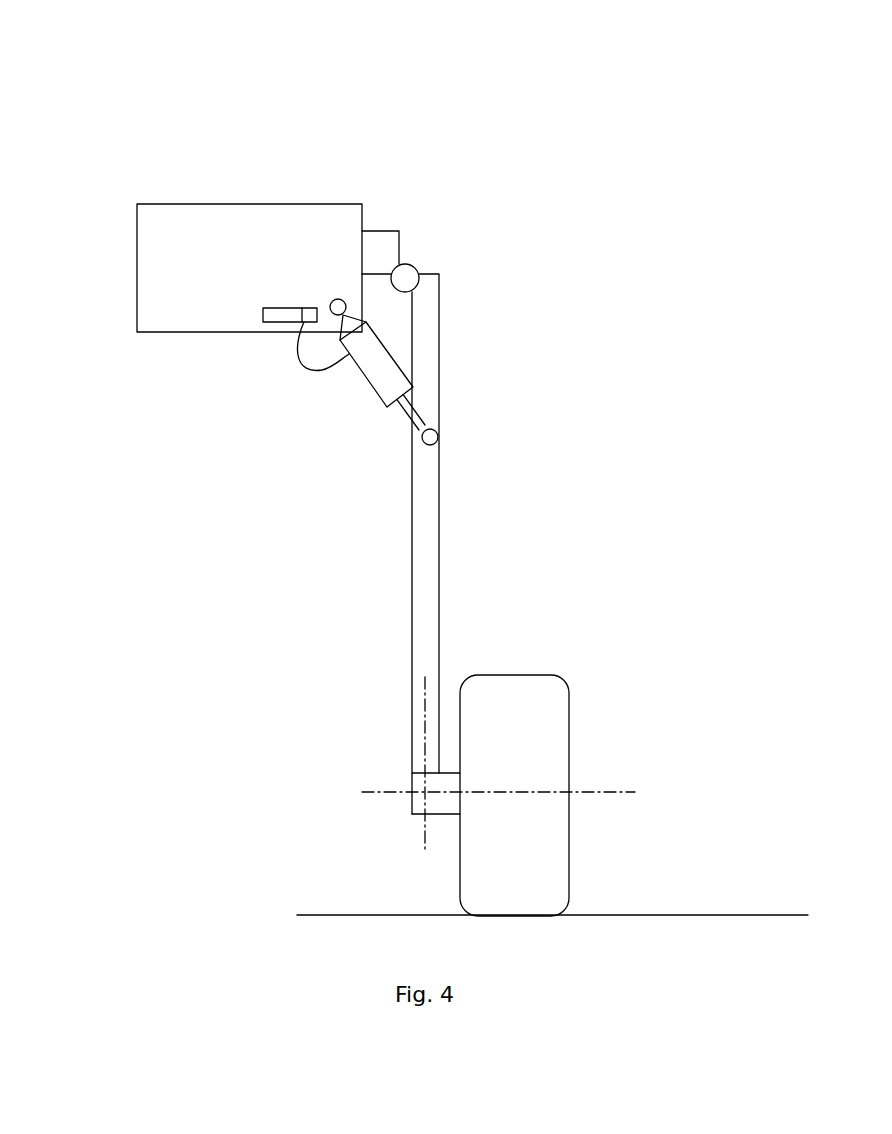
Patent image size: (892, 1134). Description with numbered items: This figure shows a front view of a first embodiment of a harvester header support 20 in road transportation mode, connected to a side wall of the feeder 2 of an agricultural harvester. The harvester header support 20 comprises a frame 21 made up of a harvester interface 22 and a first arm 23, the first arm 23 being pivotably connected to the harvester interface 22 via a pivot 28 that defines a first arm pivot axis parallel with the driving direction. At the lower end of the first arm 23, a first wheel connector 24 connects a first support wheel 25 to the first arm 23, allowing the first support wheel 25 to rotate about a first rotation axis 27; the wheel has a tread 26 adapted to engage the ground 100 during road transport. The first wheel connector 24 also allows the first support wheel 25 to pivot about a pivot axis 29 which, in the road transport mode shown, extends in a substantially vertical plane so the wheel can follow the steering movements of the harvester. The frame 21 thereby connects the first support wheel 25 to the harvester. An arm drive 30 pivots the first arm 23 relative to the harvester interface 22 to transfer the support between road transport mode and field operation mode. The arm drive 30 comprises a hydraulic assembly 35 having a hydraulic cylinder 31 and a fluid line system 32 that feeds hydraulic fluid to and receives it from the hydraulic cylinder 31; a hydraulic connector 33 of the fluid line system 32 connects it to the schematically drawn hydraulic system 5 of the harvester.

The feeder 2 is at (192, 237).
The hydraulic system 5 is at (276, 308).
The hydraulic connector 33 is at (312, 308).
The harvester interface 22 is at (383, 248).
The pivot 28 is at (406, 272).
The first arm 23 is at (427, 552).
The frame 21 is at (482, 322).
The hydraulic assembly 35 is at (310, 398).
The hydraulic cylinder 31 is at (370, 370).
The arm drive 30 is at (333, 437).
The fluid line system 32 is at (297, 353).
The harvester header support 20 is at (340, 553).
The first wheel connector 24 is at (415, 803).
The tread 26 is at (538, 675).
The first support wheel 25 is at (530, 742).
The first rotation axis 27 is at (605, 792).
The pivot axis 29 is at (425, 728).
The ground 100 is at (633, 916).